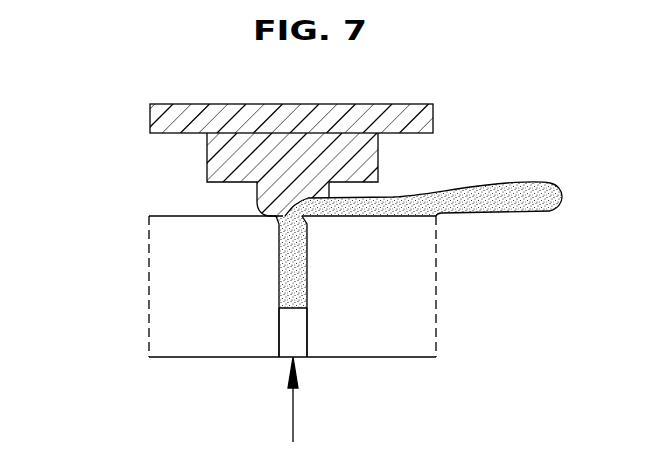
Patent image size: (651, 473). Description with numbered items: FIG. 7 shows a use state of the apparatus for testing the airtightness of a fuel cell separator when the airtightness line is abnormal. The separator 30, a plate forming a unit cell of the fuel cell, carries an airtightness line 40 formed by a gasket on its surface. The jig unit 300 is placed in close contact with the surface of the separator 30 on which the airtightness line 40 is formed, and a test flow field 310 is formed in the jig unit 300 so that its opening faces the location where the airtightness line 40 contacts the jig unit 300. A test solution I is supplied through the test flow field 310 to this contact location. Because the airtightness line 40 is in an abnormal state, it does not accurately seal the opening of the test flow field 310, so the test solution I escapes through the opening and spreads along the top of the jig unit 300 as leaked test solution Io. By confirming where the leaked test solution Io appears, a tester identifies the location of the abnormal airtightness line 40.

The separator 30 is at (423, 120).
The airtightness line 40 is at (267, 197).
The jig unit 300 is at (422, 295).
The test flow field 310 is at (292, 333).
The test solution I is at (292, 250).
The leaked test solution Io is at (545, 190).